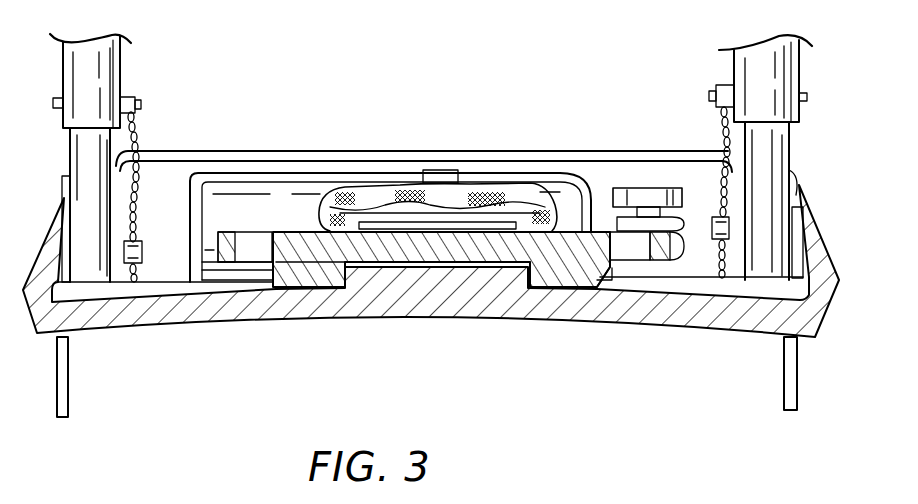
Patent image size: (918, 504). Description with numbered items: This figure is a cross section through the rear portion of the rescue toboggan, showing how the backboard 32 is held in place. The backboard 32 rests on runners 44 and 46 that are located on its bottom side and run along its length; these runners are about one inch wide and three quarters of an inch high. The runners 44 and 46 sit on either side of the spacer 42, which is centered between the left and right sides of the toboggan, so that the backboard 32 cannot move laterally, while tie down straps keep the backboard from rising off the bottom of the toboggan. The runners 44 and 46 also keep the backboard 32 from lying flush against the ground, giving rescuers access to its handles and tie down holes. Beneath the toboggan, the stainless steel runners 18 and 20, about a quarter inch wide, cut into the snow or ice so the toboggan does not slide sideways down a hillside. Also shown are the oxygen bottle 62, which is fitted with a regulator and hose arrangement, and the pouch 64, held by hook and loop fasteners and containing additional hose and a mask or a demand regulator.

The runner 18 is at (66, 375).
The runner 20 is at (787, 370).
The backboard 32 is at (563, 257).
The spacer 42 is at (417, 290).
The runner 44 is at (556, 268).
The runner 46 is at (312, 268).
The oxygen bottle 62 is at (245, 207).
The pouch 64 is at (379, 195).